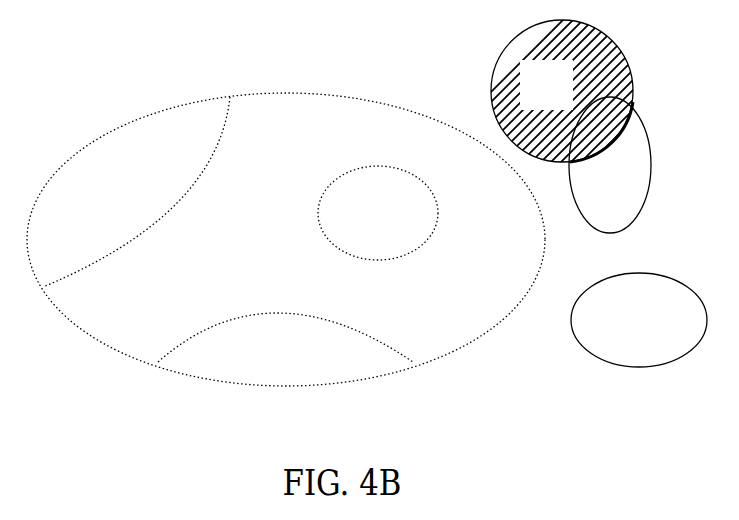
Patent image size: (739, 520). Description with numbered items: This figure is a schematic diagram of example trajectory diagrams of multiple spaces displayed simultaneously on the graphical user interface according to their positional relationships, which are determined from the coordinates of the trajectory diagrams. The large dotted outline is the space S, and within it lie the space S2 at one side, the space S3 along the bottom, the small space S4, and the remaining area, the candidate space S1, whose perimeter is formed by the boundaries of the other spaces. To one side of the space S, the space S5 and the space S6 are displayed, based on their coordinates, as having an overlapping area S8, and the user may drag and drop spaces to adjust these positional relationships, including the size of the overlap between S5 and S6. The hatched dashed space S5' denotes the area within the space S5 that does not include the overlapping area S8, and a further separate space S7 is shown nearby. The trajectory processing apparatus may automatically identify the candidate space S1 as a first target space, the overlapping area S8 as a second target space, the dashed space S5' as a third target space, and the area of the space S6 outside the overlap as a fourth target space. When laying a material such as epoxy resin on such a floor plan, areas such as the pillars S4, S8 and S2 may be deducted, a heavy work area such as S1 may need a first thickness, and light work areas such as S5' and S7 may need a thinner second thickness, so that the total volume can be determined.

The space S is at (286, 239).
The candidate space S1 is at (247, 238).
The space S2 is at (136, 192).
The space S3 is at (285, 341).
The space S4 is at (378, 213).
The space S5 is at (594, 91).
The dashed space S5' is at (565, 95).
The space S6 is at (610, 165).
The space S7 is at (639, 320).
The overlapping area S8 is at (601, 132).